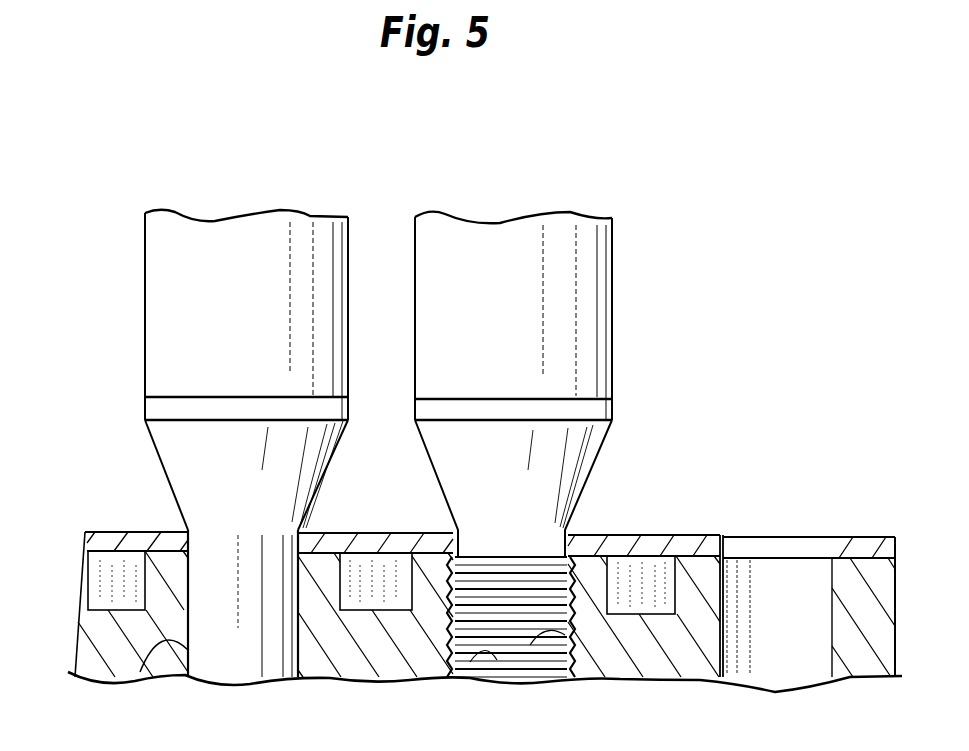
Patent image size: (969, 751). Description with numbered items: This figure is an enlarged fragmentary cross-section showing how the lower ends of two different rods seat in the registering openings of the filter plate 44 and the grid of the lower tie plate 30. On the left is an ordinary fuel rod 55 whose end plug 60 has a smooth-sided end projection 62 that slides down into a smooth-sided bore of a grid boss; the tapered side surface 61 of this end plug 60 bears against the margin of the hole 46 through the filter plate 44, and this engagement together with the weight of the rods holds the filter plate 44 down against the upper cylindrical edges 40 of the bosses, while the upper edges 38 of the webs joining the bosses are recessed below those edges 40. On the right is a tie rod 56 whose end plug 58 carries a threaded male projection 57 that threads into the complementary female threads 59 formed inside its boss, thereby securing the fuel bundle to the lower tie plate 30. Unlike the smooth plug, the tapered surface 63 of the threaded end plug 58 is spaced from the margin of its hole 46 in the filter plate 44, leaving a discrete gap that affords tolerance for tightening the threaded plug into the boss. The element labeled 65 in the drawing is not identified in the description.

The lower tie plate 30 is at (621, 687).
The upper edges of the webs 38 is at (372, 587).
The upper cylindrical edges of the bosses 40 is at (432, 528).
The filter plate 44 is at (688, 540).
The holes of the filter plate 46 is at (832, 548).
The fuel rod 55 is at (203, 480).
The tie rod 56 is at (526, 472).
The threaded male projection 57 is at (498, 683).
The end plug of tie rod 58 is at (570, 468).
The female threads of the bosses 59 is at (527, 657).
The end plug of fuel rod 60 is at (193, 487).
The tapered side surface 61 is at (150, 452).
The end projection 62 is at (200, 645).
The tapered surface of threaded end plug 63 is at (412, 442).
The solder fillet 65 is at (148, 655).